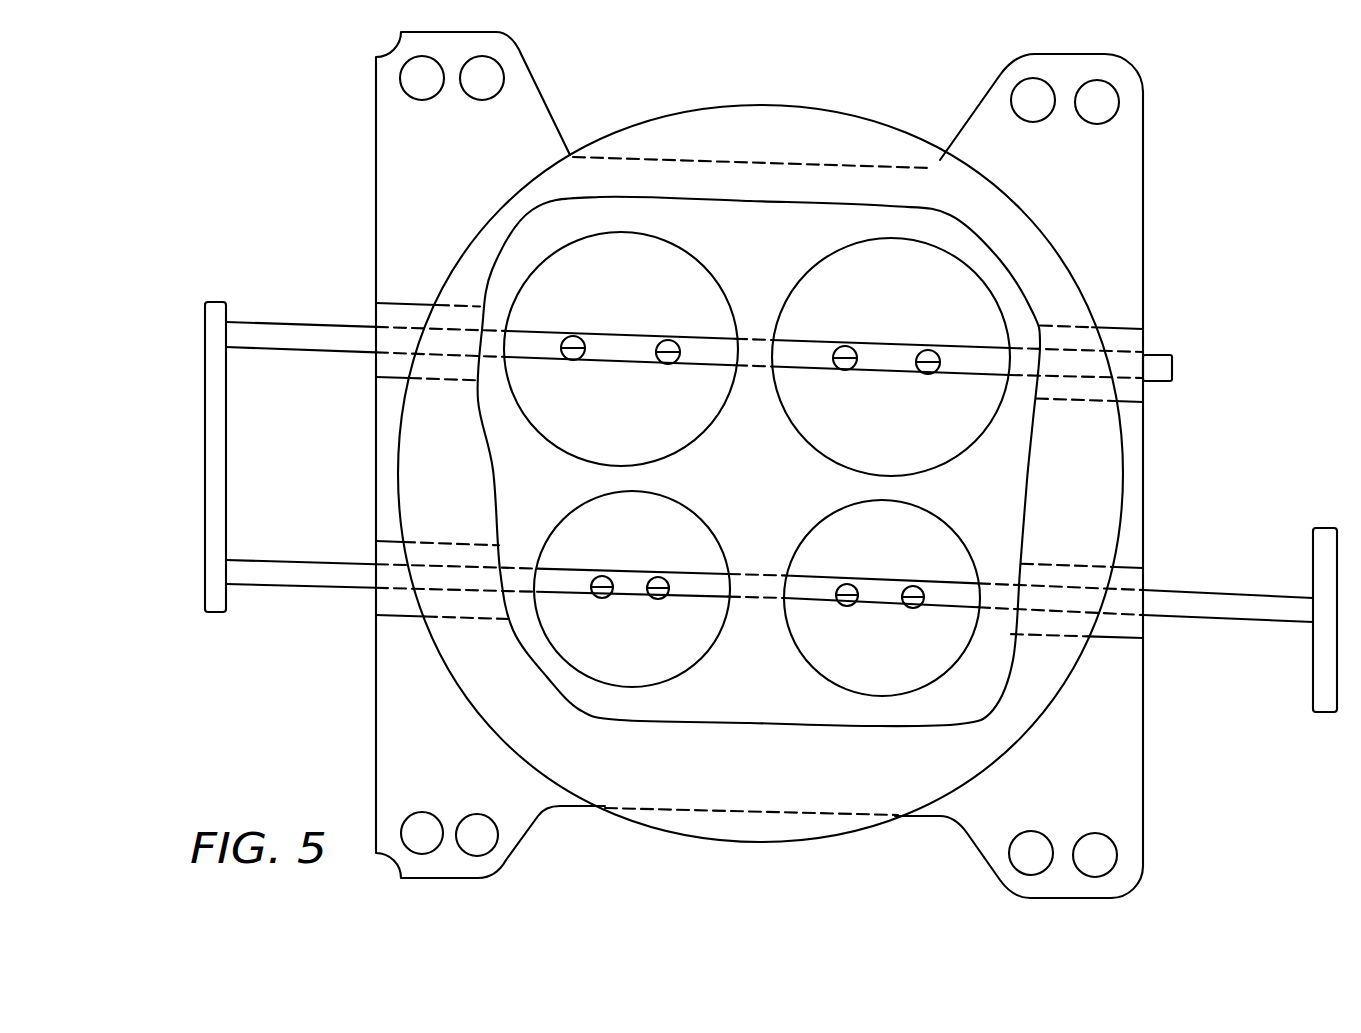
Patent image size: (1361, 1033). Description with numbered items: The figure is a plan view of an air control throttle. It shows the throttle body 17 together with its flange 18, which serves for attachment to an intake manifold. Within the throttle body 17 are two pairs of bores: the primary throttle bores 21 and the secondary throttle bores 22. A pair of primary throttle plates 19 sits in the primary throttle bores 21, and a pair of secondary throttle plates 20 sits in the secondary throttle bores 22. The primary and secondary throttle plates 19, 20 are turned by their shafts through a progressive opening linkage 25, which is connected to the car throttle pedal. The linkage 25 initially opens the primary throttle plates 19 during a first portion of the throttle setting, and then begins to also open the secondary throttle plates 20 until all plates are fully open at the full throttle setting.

The throttle body 17 is at (1032, 477).
The flange 18 is at (1123, 235).
The primary throttle plates 19 is at (672, 658).
The secondary throttle plates 20 is at (585, 423).
The primary throttle bores 21 is at (757, 593).
The secondary throttle bores 22 is at (757, 354).
The progressive opening linkage 25 is at (228, 480).